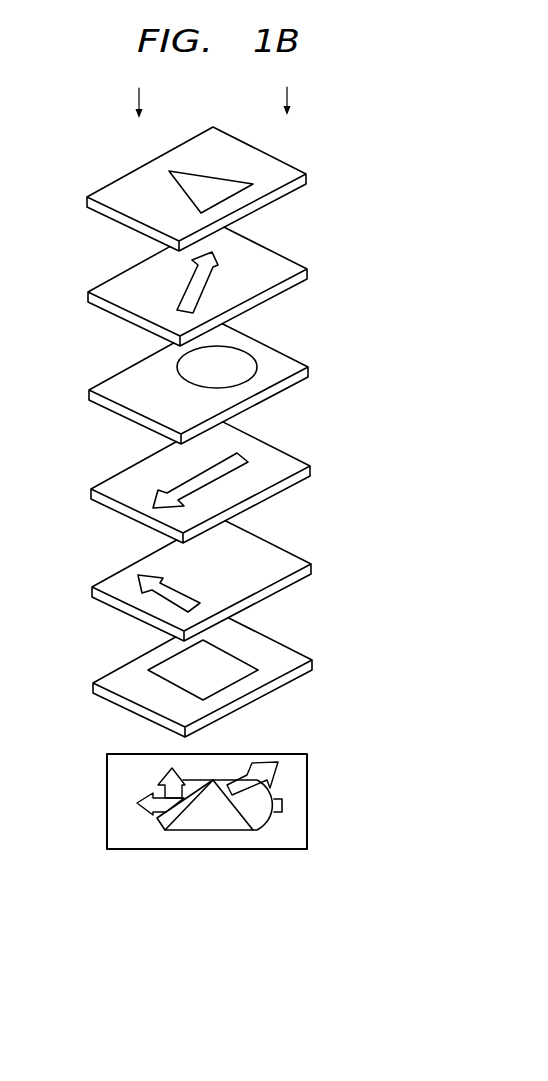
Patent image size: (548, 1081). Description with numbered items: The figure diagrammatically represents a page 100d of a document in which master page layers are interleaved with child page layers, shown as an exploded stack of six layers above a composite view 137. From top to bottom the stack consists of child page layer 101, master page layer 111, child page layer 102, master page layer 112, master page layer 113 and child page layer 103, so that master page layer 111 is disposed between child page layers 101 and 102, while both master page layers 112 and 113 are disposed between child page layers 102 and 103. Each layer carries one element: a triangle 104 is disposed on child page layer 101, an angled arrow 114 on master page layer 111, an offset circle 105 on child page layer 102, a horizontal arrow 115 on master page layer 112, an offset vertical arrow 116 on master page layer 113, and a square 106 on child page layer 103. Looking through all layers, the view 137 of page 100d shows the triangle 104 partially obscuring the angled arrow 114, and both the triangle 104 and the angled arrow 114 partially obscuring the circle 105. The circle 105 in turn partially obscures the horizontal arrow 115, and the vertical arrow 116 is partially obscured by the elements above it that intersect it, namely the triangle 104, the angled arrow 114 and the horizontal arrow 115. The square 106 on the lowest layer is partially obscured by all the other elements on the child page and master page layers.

The page 100d is at (90, 92).
The view 137 is at (316, 99).
The child page layer 101 is at (288, 163).
The master page layer 111 is at (288, 258).
The child page layer 102 is at (290, 355).
The master page layer 112 is at (290, 455).
The master page layer 113 is at (292, 552).
The child page layer 103 is at (293, 650).
The triangle 104 is at (192, 828).
The circle 105 is at (263, 826).
The square 106 is at (201, 791).
The angled arrow 114 is at (273, 782).
The horizontal arrow 115 is at (152, 812).
The vertical arrow 116 is at (160, 782).